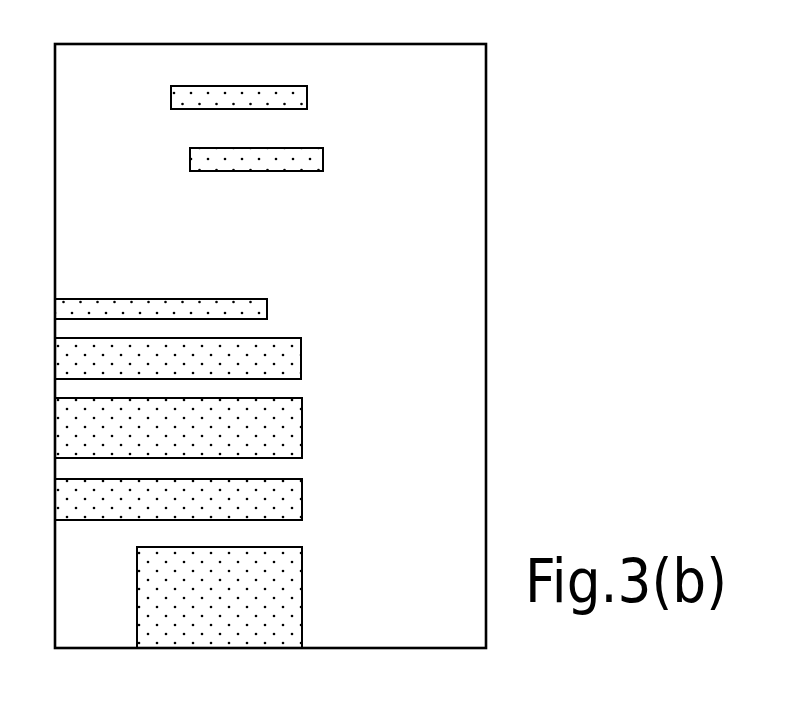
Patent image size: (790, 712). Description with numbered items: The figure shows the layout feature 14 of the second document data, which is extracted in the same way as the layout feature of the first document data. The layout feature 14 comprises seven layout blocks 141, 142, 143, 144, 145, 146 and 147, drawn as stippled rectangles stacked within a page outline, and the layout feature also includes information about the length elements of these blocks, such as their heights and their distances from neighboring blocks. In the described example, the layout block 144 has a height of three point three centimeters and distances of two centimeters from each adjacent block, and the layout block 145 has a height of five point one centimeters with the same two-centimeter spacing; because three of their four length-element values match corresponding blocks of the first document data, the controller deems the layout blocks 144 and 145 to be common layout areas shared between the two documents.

The layout feature of the second document data 14 is at (562, 230).
The layout block 141 is at (222, 90).
The layout block 142 is at (240, 150).
The layout block 143 is at (180, 300).
The layout block 144 is at (260, 374).
The layout block 145 is at (260, 433).
The layout block 146 is at (250, 497).
The layout block 147 is at (260, 576).